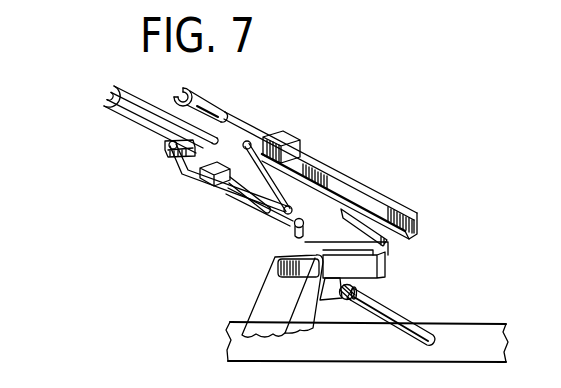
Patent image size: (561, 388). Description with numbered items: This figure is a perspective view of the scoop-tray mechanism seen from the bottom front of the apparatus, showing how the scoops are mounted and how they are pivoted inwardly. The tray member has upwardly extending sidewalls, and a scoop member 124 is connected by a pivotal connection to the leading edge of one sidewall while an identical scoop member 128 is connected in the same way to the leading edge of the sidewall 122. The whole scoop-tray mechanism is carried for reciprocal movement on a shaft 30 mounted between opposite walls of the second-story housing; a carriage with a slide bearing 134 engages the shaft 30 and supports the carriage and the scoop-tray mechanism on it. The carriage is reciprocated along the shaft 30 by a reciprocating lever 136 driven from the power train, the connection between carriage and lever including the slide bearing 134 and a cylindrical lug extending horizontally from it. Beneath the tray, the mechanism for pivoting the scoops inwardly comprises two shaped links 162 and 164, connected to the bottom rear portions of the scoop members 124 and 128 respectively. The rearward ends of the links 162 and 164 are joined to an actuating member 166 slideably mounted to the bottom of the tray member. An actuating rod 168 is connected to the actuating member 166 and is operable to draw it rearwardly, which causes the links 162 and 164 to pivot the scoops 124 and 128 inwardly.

The scoop member 124 is at (116, 106).
The scoop member 128 is at (198, 100).
The sidewall 122 is at (357, 183).
The shaped link 164 is at (290, 170).
The shaped link 162 is at (185, 178).
The actuating member 166 is at (238, 189).
The actuating rod 168 is at (283, 238).
The reciprocating lever 136 is at (263, 295).
The slide bearing 134 is at (382, 297).
The shaft 30 is at (392, 335).